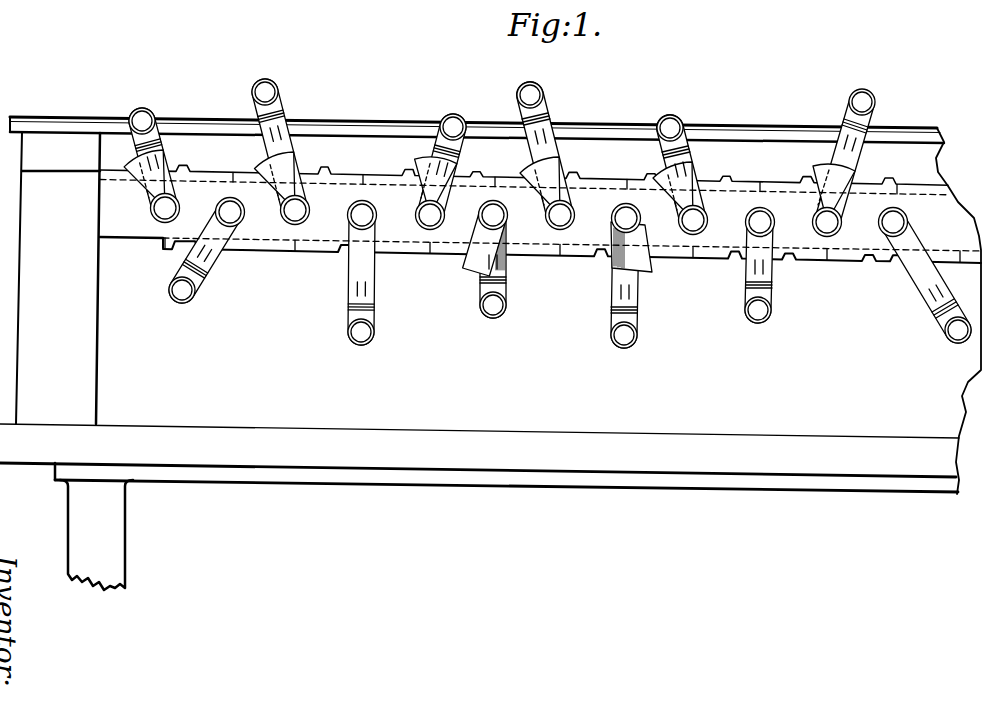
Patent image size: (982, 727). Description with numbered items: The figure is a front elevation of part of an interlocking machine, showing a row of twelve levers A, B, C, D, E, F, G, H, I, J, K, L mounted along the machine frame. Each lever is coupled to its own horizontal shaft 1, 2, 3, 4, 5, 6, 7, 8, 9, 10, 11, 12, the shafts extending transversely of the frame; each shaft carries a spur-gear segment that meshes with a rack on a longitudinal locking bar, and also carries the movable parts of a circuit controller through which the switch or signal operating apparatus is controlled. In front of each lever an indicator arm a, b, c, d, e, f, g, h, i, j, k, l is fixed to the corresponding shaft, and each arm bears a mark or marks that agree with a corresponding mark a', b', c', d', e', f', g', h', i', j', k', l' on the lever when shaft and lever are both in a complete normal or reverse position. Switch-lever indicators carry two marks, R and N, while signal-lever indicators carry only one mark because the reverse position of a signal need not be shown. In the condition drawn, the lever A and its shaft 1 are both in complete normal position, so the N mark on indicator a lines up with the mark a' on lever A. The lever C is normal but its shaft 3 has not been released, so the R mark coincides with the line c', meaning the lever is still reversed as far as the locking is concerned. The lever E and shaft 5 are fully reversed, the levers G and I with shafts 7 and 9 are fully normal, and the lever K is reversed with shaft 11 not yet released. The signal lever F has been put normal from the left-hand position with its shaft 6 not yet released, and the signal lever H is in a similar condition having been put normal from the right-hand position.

The lever A is at (151, 153).
The lever B is at (197, 251).
The lever C is at (285, 152).
The lever D is at (358, 273).
The lever E is at (442, 159).
The signal lever F is at (486, 260).
The lever G is at (547, 156).
The signal lever H is at (628, 276).
The lever I is at (678, 166).
The lever J is at (753, 266).
The lever K is at (855, 163).
The lever L is at (925, 276).
The indicator a is at (128, 159).
The mark a' is at (174, 152).
The indicator b is at (223, 263).
The mark b' is at (177, 258).
The indicator c is at (305, 148).
The mark c' is at (255, 147).
The indicator d is at (381, 276).
The mark d' is at (336, 285).
The indicator e is at (463, 164).
The mark e' is at (421, 158).
The indicator f is at (462, 268).
The mark f' is at (514, 267).
The indicator g is at (520, 152).
The mark g' is at (568, 147).
The indicator h is at (651, 281).
The mark h' is at (602, 286).
The indicator i is at (656, 167).
The mark i' is at (702, 161).
The indicator j is at (740, 271).
The mark j' is at (732, 281).
The indicator k is at (823, 151).
The mark k' is at (875, 154).
The indicator l is at (913, 283).
The mark l' is at (910, 299).
The horizontal shaft 1 is at (165, 208).
The horizontal shaft 2 is at (230, 212).
The horizontal shaft 3 is at (295, 210).
The horizontal shaft 4 is at (362, 215).
The horizontal shaft 5 is at (430, 215).
The horizontal shaft 6 is at (493, 215).
The horizontal shaft 7 is at (560, 215).
The horizontal shaft 8 is at (626, 218).
The horizontal shaft 9 is at (693, 220).
The horizontal shaft 10 is at (760, 222).
The horizontal shaft 11 is at (827, 222).
The horizontal shaft 12 is at (893, 222).